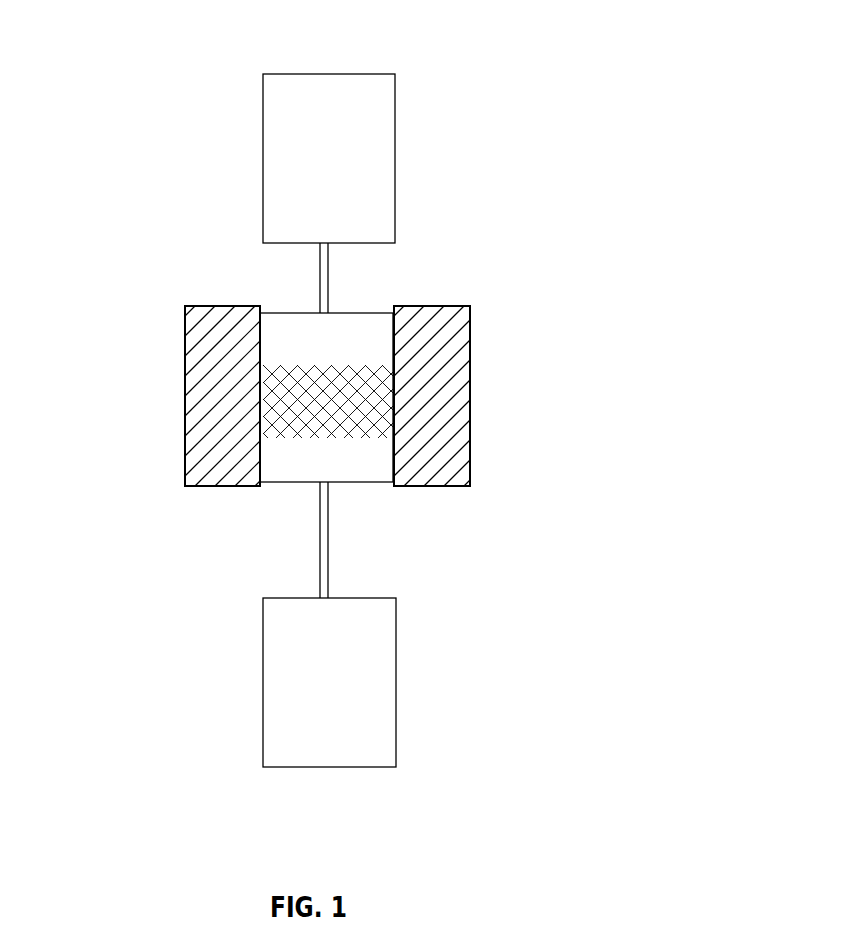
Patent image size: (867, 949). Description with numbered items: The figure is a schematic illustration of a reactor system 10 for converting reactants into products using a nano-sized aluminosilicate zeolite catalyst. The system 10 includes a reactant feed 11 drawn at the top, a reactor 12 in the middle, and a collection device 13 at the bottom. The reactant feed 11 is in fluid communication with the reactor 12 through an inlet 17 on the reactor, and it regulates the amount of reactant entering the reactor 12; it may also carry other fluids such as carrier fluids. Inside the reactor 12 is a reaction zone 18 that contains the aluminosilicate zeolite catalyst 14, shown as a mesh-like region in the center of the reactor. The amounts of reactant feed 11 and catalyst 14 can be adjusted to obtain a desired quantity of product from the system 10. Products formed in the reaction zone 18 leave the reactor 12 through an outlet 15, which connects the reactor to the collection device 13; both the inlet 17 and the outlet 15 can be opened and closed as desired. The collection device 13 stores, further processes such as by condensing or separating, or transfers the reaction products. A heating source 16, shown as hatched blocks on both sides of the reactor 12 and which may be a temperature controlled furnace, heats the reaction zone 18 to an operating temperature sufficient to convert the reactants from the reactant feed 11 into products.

The reactor system 10 is at (440, 79).
The reactant feed 11 is at (343, 167).
The reactor 12 is at (268, 304).
The collection device 13 is at (343, 675).
The aluminosilicate zeolite catalyst 14 is at (307, 421).
The outlet 15 is at (312, 494).
The heating source 16 is at (172, 394).
The inlet 17 is at (345, 300).
The reaction zone 18 is at (341, 353).